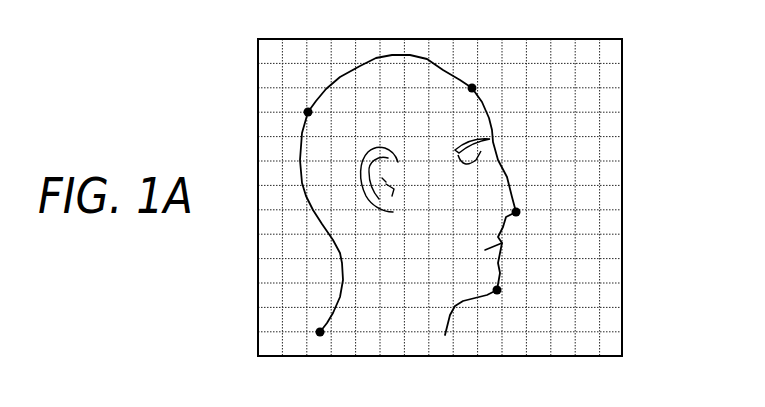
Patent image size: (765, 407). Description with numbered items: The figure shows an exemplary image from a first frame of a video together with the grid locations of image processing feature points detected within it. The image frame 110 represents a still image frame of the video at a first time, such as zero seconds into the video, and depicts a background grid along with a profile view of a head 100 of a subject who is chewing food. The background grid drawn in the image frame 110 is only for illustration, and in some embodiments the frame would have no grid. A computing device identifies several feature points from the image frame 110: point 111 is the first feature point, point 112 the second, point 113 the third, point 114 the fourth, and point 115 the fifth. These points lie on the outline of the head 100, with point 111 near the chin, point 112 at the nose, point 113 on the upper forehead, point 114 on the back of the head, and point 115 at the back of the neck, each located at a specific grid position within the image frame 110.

The head 100 is at (392, 55).
The image frame 110 is at (622, 40).
The point 111 is at (497, 290).
The point 112 is at (516, 212).
The point 113 is at (472, 88).
The point 114 is at (308, 112).
The point 115 is at (320, 332).